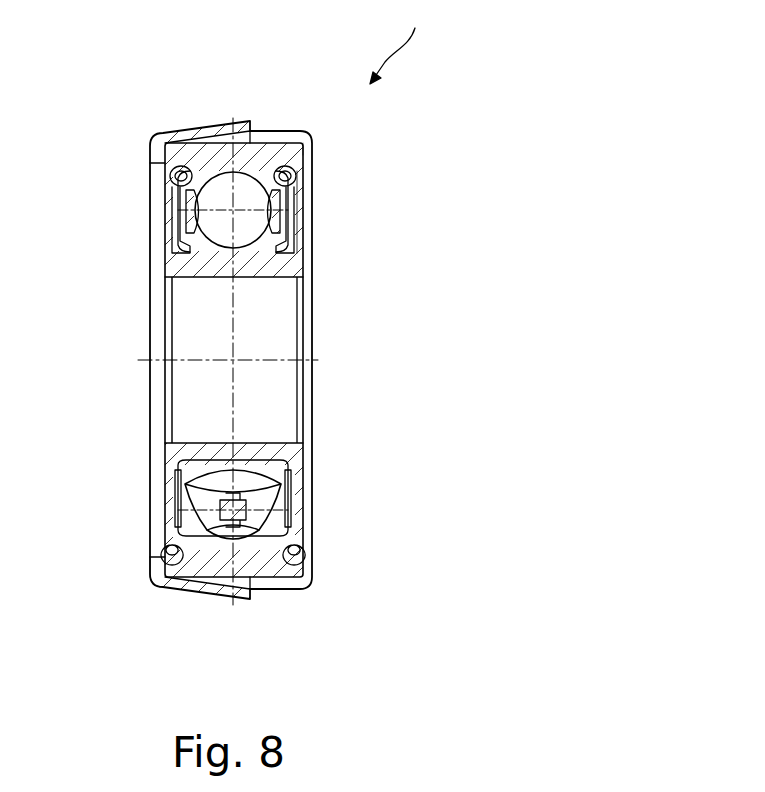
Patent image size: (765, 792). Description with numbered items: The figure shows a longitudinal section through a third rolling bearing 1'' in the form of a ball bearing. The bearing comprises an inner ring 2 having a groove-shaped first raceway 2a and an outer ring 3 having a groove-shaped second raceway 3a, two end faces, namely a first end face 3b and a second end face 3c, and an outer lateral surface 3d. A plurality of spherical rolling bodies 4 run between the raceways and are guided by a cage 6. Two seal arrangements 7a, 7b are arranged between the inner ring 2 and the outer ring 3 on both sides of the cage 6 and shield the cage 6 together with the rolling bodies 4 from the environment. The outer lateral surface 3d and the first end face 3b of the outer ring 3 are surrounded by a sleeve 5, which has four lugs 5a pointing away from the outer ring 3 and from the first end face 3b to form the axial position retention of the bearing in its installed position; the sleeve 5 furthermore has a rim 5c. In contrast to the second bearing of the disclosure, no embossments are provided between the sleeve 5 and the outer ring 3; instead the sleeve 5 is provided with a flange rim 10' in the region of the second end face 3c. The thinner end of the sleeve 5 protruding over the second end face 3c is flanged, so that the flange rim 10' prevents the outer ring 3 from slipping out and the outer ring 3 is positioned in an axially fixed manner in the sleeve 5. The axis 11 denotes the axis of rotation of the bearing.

The third rolling bearing 1'' is at (403, 43).
The inner ring 2 is at (290, 265).
The first raceway 2a is at (172, 244).
The outer ring 3 is at (290, 570).
The second raceway 3a is at (160, 199).
The first end face 3b is at (153, 158).
The second end face 3c is at (309, 170).
The outer lateral surface 3d is at (251, 136).
The rolling bodies 4 is at (276, 455).
The sleeve 5 is at (153, 140).
The lugs 5a is at (244, 128).
The rim 5c is at (157, 565).
The cage 6 is at (272, 500).
The seal arrangement 7a is at (166, 505).
The seal arrangement 7b is at (299, 500).
The flange rim 10' is at (351, 383).
The axis 11 is at (275, 360).